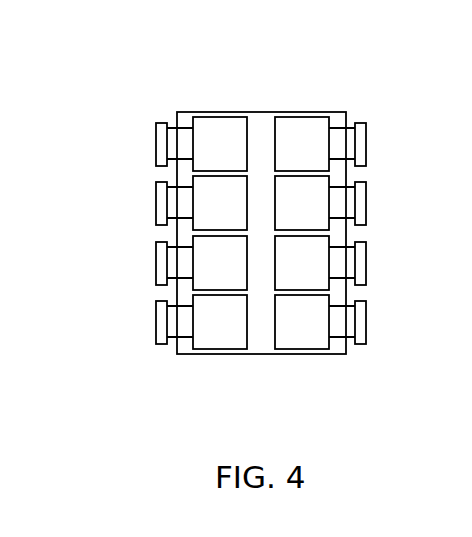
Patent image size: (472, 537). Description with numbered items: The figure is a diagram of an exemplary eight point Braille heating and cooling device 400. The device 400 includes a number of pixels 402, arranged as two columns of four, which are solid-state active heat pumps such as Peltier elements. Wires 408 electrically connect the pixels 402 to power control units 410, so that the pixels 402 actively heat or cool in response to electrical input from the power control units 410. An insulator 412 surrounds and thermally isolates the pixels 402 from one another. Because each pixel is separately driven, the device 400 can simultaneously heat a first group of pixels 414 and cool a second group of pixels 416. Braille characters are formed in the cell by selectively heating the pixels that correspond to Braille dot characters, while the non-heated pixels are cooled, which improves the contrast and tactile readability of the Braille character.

The eight point Braille heating and cooling device 400 is at (239, 208).
The pixels 402 is at (240, 154).
The wires 408 is at (348, 343).
The power control units 410 is at (367, 260).
The insulator 412 is at (265, 355).
The first group of pixels 414 is at (248, 108).
The second group of pixels 416 is at (330, 108).